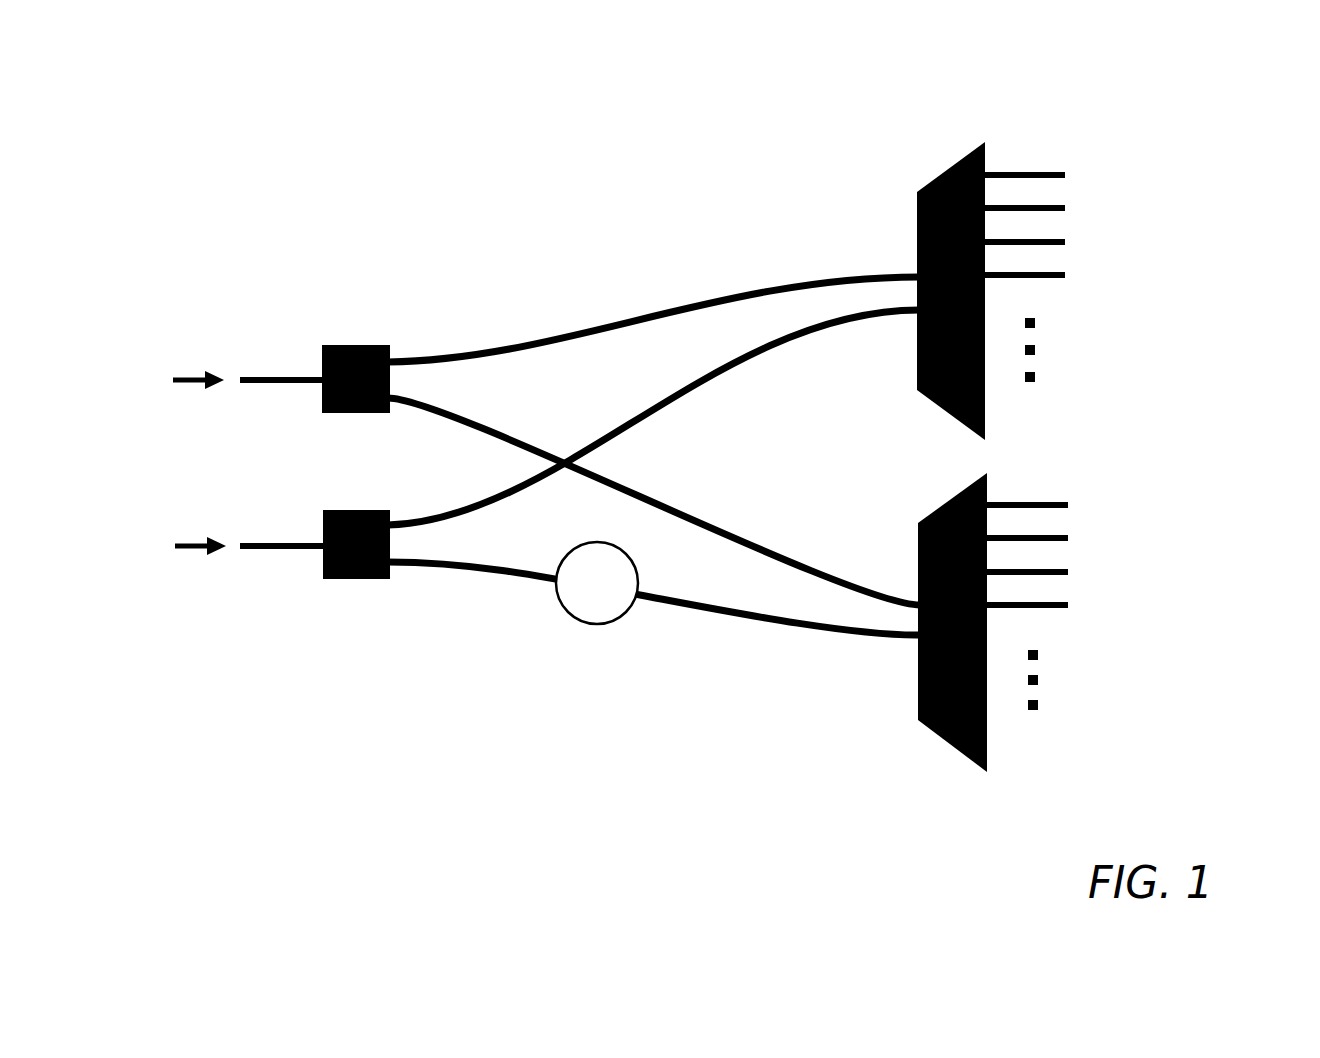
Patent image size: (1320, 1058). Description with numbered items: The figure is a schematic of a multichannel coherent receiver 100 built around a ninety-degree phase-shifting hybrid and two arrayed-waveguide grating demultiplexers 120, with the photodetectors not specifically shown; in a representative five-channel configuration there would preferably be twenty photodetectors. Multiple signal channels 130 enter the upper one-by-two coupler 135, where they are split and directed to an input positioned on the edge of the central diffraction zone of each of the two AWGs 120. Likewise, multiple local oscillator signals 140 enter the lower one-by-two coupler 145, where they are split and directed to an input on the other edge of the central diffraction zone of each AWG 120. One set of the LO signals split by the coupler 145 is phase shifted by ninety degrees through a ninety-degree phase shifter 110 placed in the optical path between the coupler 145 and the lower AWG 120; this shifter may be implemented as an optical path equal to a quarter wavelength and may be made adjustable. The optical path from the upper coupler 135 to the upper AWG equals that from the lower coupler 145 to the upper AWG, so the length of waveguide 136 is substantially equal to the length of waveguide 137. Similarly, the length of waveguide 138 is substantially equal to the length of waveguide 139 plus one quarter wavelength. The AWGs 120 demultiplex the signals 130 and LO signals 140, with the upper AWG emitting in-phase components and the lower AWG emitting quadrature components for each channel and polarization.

The multichannel coherent receiver 100 is at (950, 54).
The 90-degree phase shifter 110 is at (610, 623).
The arrayed-waveguide grating demultiplexer 120 is at (937, 175).
The multiple signal channels 130 is at (200, 377).
The 1×2 coupler 135 is at (363, 345).
The waveguide 136 is at (653, 313).
The waveguide 137 is at (707, 393).
The waveguide 138 is at (717, 527).
The waveguide 139 is at (737, 617).
The multiple local oscillator signals 140 is at (186, 551).
The 1×2 coupler 145 is at (362, 580).